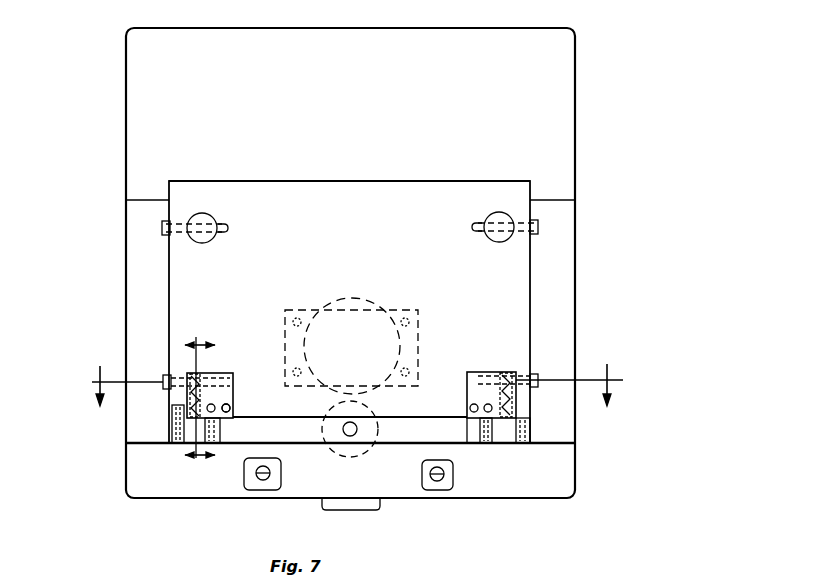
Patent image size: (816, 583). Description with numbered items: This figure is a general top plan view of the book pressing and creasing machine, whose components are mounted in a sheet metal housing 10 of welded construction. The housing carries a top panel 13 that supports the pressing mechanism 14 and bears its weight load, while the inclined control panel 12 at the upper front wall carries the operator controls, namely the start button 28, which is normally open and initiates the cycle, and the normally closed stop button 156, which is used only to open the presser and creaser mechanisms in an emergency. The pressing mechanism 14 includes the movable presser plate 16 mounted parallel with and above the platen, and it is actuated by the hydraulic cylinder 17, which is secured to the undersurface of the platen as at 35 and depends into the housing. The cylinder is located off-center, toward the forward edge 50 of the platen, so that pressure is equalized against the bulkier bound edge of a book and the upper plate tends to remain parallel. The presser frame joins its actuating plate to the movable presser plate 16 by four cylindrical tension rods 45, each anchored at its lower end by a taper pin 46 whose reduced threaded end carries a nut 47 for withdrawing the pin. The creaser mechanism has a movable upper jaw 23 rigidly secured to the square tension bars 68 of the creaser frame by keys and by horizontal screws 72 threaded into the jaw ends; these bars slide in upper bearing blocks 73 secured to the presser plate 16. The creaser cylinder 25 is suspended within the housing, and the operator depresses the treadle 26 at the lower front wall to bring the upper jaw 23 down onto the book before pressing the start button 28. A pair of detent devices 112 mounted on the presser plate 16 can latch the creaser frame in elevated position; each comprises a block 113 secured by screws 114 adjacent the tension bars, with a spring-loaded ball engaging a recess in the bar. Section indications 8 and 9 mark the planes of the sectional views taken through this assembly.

The section line 8- 8 is at (357, 372).
The section line 9- 9 is at (200, 399).
The housing 10 is at (126, 257).
The control panel 12 is at (562, 474).
The top panel 13 is at (550, 130).
The pressing mechanism 14 is at (390, 186).
The movable presser plate 16 is at (348, 200).
The hydraulic cylinder 17 is at (372, 300).
The upper jaw 23 is at (464, 430).
The creaser cylinder 25 is at (322, 410).
The treadle 26 is at (340, 504).
The start button 28 is at (440, 481).
The cylinder securement 35 is at (418, 312).
The tension rods 45 is at (215, 216).
The taper pins 46 is at (174, 236).
The nut 47 is at (166, 223).
The forward edge 50 is at (391, 404).
The tension bars 68 is at (506, 428).
The horizontal screws 72 is at (168, 405).
The upper bearing blocks 73 is at (506, 444).
The detent devices 112 is at (229, 372).
The block 113 is at (470, 393).
The screws 114 is at (235, 396).
The stop button 156 is at (263, 481).